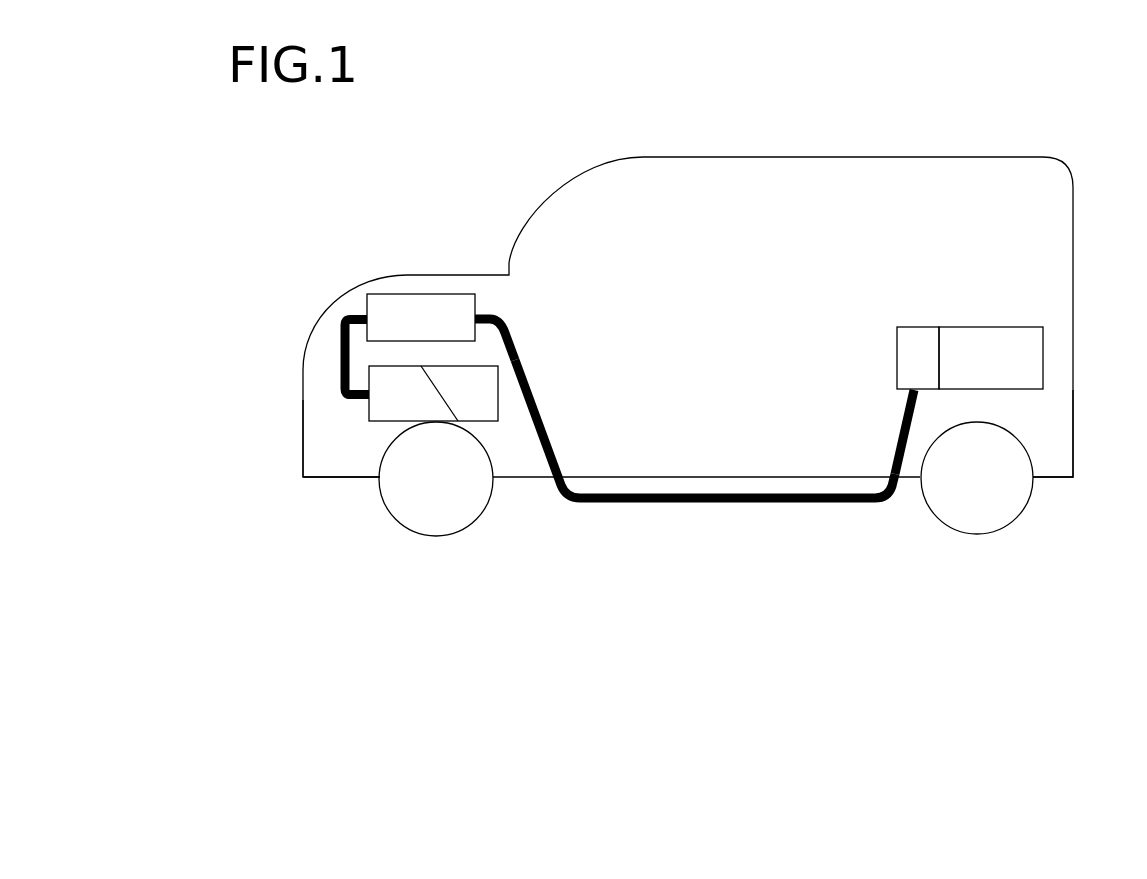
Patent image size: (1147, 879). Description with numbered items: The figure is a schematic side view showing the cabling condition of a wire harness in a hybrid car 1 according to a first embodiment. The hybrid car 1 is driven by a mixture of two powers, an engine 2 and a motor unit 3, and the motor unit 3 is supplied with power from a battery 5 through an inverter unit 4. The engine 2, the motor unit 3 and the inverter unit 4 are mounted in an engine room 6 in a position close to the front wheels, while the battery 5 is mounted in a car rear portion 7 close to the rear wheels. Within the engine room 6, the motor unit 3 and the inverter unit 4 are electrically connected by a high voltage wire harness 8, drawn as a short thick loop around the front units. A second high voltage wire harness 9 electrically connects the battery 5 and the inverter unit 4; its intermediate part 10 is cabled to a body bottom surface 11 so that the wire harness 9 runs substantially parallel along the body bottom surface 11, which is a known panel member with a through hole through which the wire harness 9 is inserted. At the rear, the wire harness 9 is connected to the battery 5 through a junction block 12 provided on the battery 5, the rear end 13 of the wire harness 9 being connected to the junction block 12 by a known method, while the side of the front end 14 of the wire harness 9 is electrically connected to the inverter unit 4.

The hybrid car 1 is at (436, 184).
The engine 2 is at (480, 400).
The motor unit 3 is at (383, 406).
The inverter unit 4 is at (396, 308).
The battery 5 is at (996, 340).
The engine room 6 is at (323, 447).
The car rear portion 7 is at (1048, 417).
The high voltage wire harness 8 is at (334, 343).
The high voltage wire harness 9 is at (630, 505).
The intermediate part 10 is at (738, 505).
The body bottom surface 11 is at (828, 480).
The junction block 12 is at (908, 340).
The rear end 13 is at (907, 412).
The front end 14 is at (507, 313).